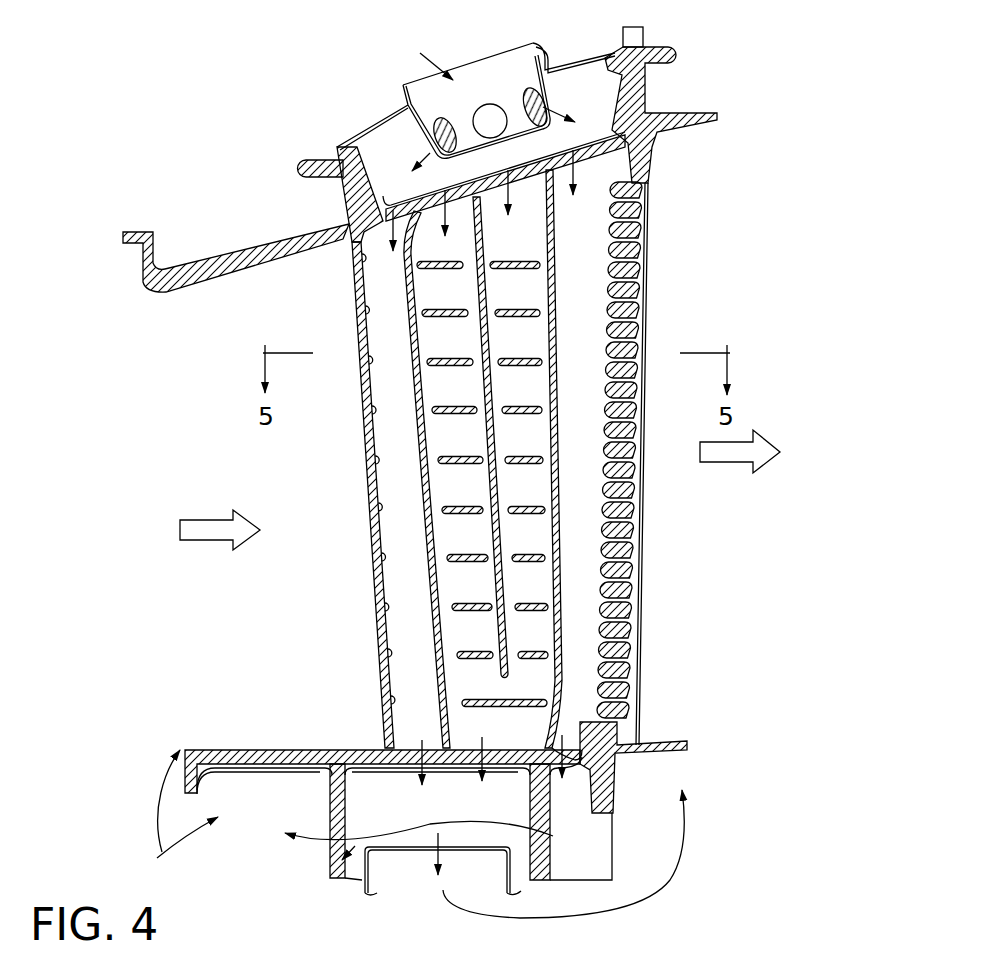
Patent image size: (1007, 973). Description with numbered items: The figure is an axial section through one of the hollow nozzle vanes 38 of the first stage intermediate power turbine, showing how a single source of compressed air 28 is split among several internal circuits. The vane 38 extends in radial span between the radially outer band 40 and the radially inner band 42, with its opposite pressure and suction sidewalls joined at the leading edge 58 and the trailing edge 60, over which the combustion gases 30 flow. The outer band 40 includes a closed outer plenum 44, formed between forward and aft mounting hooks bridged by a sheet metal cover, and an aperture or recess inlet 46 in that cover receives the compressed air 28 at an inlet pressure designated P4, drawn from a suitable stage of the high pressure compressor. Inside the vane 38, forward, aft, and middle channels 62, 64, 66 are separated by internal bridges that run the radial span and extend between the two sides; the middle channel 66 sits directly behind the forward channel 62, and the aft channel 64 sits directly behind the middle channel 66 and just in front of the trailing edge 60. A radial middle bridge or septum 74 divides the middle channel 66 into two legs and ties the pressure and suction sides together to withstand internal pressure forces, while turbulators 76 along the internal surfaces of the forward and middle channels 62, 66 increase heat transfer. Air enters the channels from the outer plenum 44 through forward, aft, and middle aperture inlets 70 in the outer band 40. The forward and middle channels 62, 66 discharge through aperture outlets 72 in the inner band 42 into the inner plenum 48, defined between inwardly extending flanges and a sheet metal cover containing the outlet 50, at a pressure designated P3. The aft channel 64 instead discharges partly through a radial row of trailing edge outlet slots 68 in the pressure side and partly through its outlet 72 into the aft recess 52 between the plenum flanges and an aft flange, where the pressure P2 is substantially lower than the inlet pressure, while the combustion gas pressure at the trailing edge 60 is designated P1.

The compressed air 28 is at (462, 44).
The combustion gases 30 is at (207, 540).
The vane 38 is at (652, 232).
The outer band 40 is at (242, 278).
The inner band 42 is at (323, 748).
The outer plenum 44 is at (596, 108).
The inlet 46 is at (542, 47).
The inner plenum 48 is at (345, 868).
The outlet 50 is at (378, 882).
The aft recess 52 is at (598, 806).
The leading edge 58 is at (360, 410).
The trailing edge 60 is at (647, 277).
The forward channel 62 is at (421, 544).
The aft channel 64 is at (588, 628).
The middle channel 66 is at (484, 592).
The trailing edge outlet slots 68 is at (628, 315).
The aperture inlets 70 is at (590, 163).
The aperture outlets 72 is at (568, 747).
The middle bridge 74 is at (492, 398).
The turbulators 76 is at (524, 311).
The combustion gas pressure at trailing edge P1 is at (720, 452).
The aft recess discharge pressure P2 is at (565, 821).
The inner plenum discharge pressure P3 is at (395, 806).
The outer plenum inlet pressure P4 is at (459, 54).